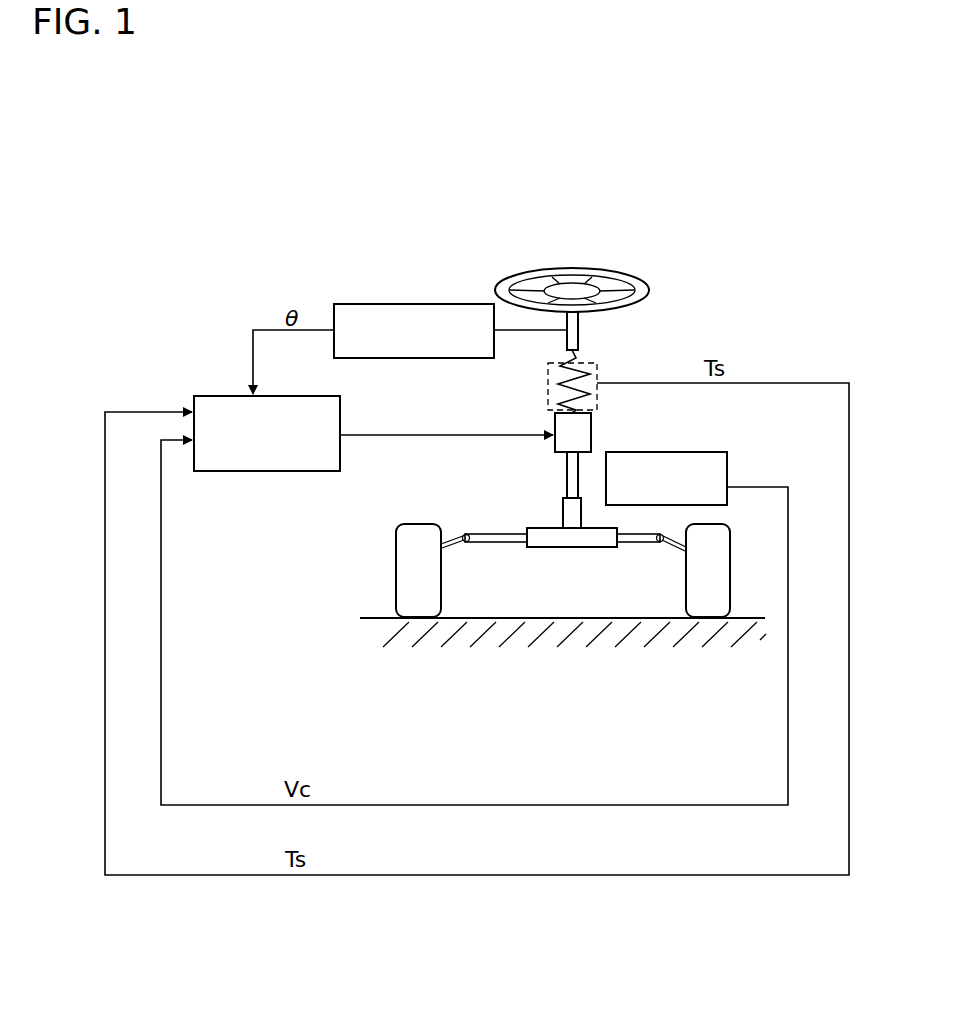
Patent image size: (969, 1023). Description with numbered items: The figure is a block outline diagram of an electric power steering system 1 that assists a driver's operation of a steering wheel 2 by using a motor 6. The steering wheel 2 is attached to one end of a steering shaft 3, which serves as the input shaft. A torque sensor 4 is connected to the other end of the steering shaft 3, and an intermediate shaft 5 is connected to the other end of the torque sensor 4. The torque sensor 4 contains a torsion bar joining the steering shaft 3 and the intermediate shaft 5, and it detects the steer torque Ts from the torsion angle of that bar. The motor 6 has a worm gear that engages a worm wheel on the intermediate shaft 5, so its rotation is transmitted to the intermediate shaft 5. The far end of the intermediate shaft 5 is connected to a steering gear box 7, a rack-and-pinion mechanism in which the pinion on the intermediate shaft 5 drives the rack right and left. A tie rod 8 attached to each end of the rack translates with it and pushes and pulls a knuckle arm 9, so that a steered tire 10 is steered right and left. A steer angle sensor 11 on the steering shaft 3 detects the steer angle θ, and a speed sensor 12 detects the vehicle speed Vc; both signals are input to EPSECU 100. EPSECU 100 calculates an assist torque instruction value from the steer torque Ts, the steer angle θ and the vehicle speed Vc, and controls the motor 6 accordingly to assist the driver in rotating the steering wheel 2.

The electric power steering system 1 is at (765, 254).
The steering wheel 2 is at (519, 276).
The steering shaft 3 is at (580, 337).
The torque sensor 4 is at (597, 366).
The intermediate shaft 5 is at (567, 478).
The motor 6 is at (592, 425).
The steering gear box 7 is at (544, 528).
The tie rod 8 is at (498, 548).
The knuckle arm 9 is at (455, 535).
The steered tire 10 is at (396, 556).
The steer angle sensor 11 is at (362, 304).
The speed sensor 12 is at (727, 475).
The EPSECU 100 is at (215, 396).